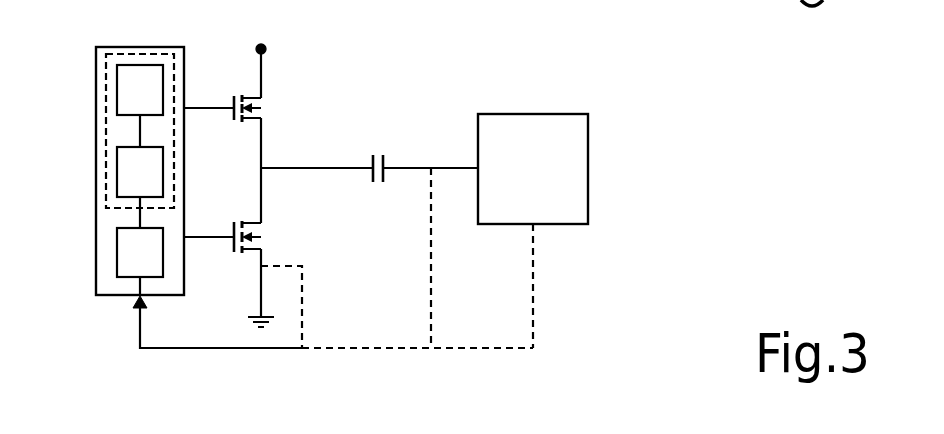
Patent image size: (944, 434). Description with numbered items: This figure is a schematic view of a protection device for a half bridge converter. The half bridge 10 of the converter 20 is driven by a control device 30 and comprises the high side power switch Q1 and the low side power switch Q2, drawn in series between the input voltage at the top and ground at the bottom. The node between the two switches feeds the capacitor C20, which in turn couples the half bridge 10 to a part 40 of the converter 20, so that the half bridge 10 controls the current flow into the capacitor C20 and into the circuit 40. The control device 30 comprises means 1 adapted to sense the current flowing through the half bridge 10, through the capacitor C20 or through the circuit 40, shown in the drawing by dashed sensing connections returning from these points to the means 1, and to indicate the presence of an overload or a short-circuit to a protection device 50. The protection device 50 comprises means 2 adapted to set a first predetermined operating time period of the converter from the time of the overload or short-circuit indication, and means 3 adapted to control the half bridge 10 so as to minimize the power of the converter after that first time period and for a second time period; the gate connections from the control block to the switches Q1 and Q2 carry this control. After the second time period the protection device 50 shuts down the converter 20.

The current sensing means 1 is at (131, 266).
The first time period setting means 2 is at (131, 185).
The half bridge control means 3 is at (131, 103).
The half bridge 10 is at (295, 166).
The converter 20 is at (369, 139).
The control device 30 is at (145, 54).
The part of the converter 40 is at (515, 186).
The protection device 50 is at (96, 124).
The high side power switch Q1 is at (245, 108).
The low side power switch Q2 is at (245, 237).
The capacitor C20 is at (386, 186).